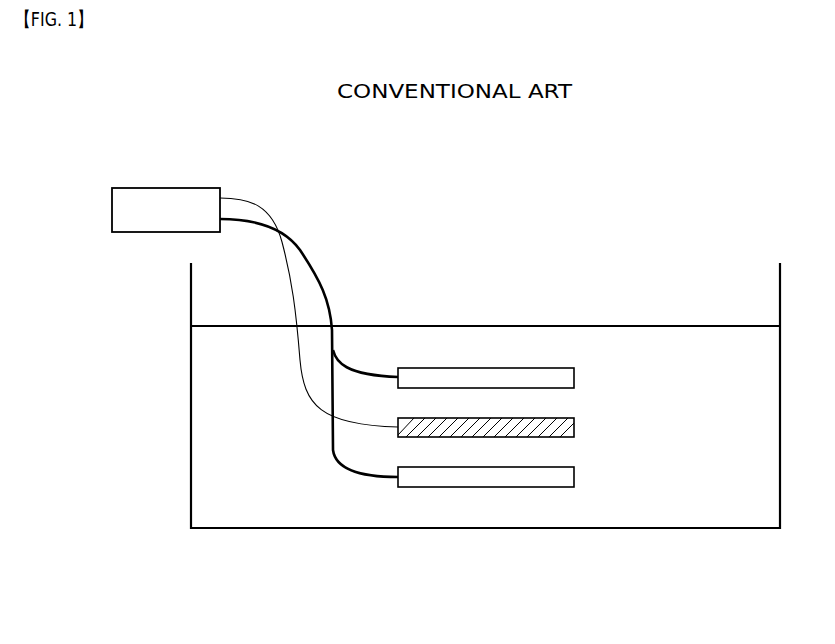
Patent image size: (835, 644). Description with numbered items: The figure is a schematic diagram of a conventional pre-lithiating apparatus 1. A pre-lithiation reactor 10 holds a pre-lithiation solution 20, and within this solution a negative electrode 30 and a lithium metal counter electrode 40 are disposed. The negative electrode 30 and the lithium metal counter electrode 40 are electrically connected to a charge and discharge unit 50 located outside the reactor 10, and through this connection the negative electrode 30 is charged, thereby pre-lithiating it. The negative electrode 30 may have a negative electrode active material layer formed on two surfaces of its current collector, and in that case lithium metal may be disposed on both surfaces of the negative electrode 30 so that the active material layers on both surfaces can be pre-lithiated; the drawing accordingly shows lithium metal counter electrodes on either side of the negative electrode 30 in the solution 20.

The pre-lithiating apparatus 1 is at (93, 159).
The pre-lithiation reactor 10 is at (498, 528).
The pre-lithiation solution 20 is at (742, 500).
The negative electrode 30 is at (574, 425).
The lithium metal counter electrode 40 is at (574, 372).
The charge and discharge unit 50 is at (168, 232).